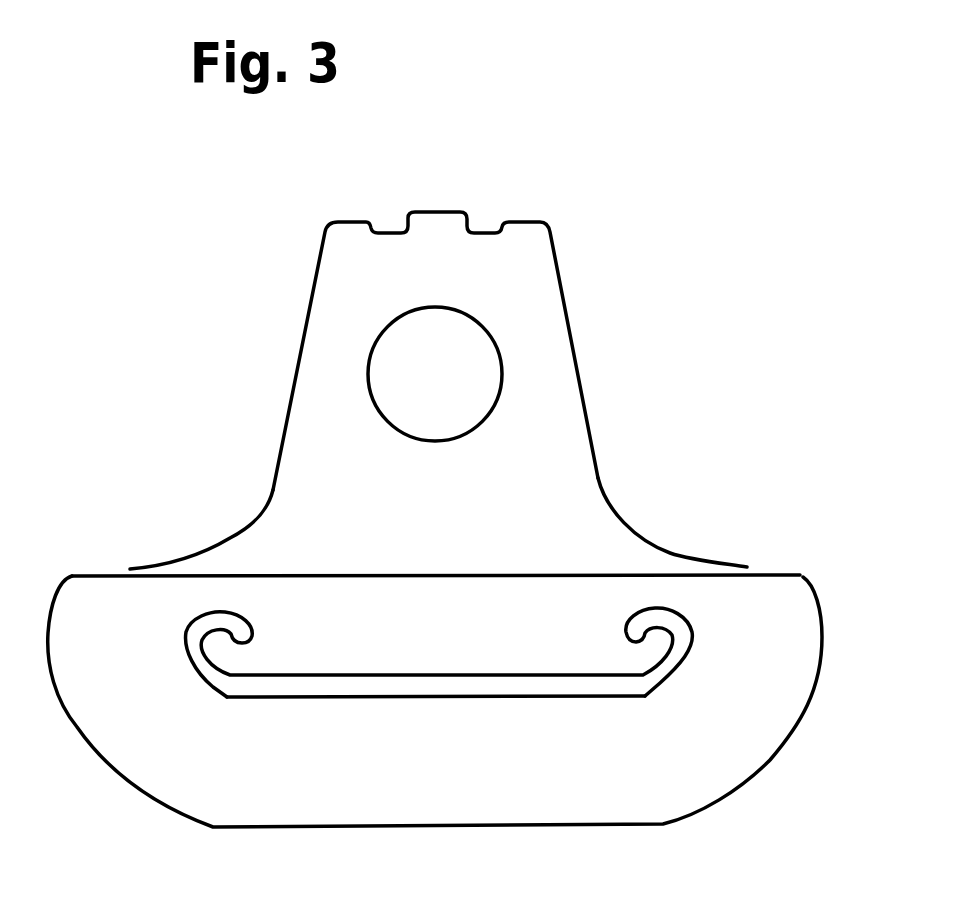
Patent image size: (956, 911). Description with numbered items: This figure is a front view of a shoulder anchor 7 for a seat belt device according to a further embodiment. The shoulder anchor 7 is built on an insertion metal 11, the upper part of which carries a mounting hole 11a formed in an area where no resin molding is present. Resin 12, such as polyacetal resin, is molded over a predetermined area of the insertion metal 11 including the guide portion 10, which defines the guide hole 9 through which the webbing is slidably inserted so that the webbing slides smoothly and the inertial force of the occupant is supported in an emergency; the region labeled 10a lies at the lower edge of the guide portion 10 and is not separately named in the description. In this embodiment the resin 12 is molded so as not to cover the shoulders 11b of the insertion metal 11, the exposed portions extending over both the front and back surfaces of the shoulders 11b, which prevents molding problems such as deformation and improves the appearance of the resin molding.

The shoulder anchor 7 is at (238, 306).
The guide hole 9 is at (313, 696).
The guide portion 10 is at (373, 757).
The lower surface of elastic body 10a is at (503, 697).
The insertion metal 11 is at (573, 451).
The mounting hole 11a is at (478, 390).
The shoulders 11b is at (131, 570).
The resin 12 is at (773, 597).